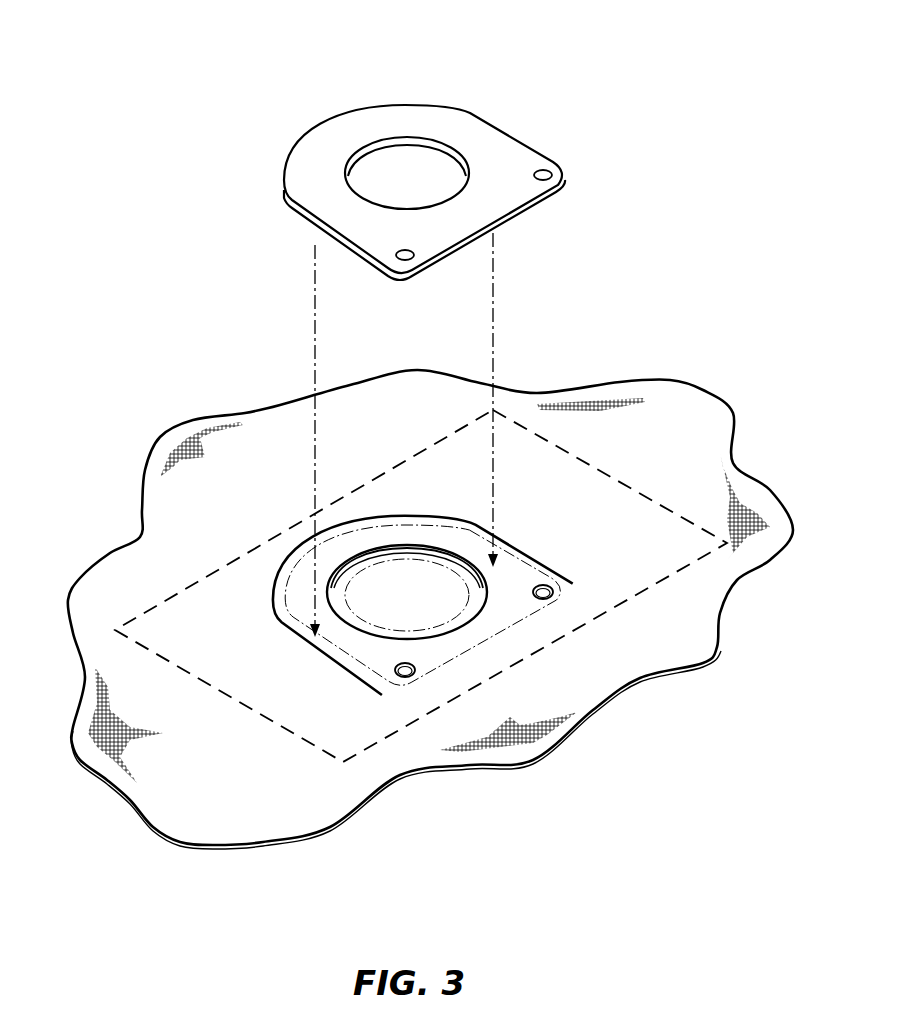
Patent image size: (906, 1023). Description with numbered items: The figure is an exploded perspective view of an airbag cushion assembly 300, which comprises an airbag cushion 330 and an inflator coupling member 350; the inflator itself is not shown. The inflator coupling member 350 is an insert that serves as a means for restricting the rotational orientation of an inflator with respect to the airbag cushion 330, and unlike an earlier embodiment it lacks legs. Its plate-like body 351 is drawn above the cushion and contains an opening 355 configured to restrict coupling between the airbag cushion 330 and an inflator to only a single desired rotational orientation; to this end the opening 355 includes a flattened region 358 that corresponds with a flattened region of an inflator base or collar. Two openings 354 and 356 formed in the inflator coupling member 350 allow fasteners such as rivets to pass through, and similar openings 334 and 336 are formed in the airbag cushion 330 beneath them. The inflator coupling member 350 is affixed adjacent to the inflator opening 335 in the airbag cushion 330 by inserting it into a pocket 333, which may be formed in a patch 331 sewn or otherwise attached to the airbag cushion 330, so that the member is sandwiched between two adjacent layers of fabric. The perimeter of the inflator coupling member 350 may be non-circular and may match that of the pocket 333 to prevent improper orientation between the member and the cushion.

The airbag cushion assembly 300 is at (738, 214).
The inflator coupling member 350 is at (508, 122).
The plate body 351 is at (303, 153).
The opening 354 is at (400, 245).
The opening 355 is at (386, 164).
The opening 356 is at (547, 166).
The flattened region 358 is at (440, 200).
The airbag cushion 330 is at (680, 637).
The patch 331 is at (693, 523).
The pocket 333 is at (340, 652).
The opening 334 is at (432, 668).
The inflator opening 335 is at (381, 576).
The opening 336 is at (566, 594).